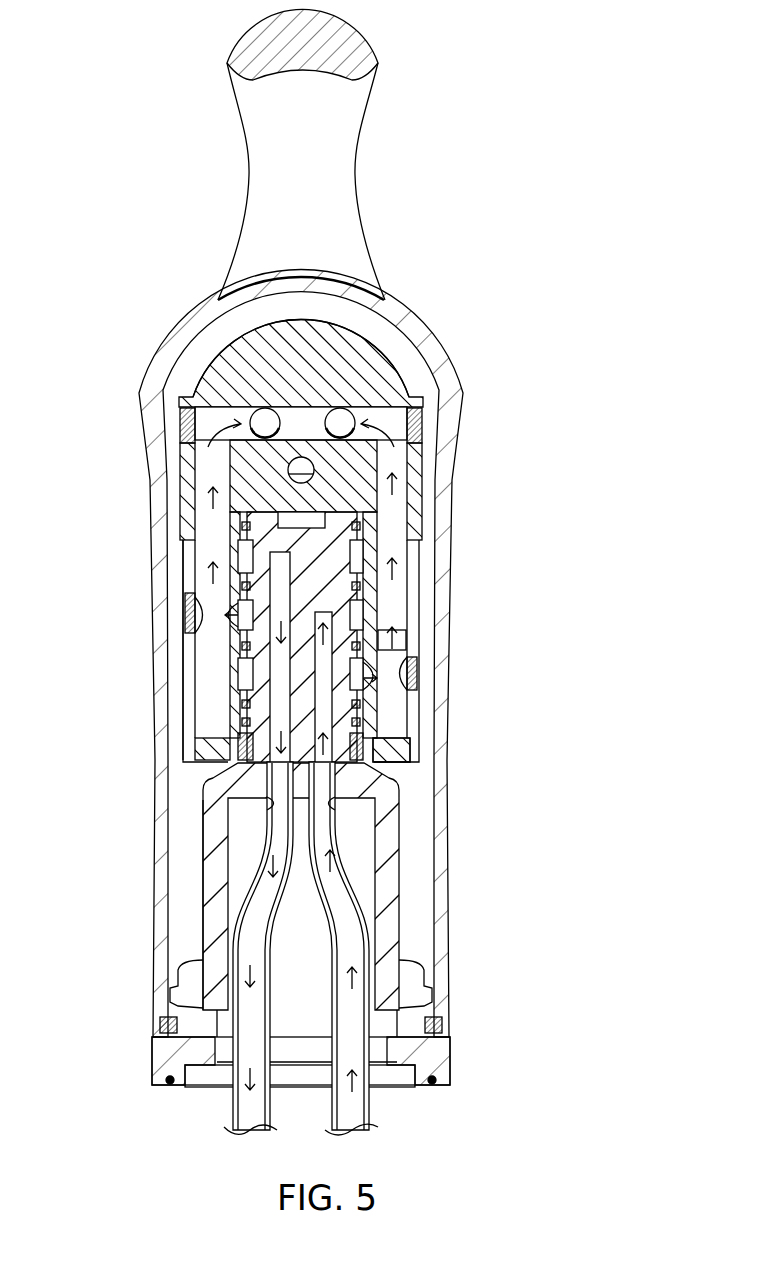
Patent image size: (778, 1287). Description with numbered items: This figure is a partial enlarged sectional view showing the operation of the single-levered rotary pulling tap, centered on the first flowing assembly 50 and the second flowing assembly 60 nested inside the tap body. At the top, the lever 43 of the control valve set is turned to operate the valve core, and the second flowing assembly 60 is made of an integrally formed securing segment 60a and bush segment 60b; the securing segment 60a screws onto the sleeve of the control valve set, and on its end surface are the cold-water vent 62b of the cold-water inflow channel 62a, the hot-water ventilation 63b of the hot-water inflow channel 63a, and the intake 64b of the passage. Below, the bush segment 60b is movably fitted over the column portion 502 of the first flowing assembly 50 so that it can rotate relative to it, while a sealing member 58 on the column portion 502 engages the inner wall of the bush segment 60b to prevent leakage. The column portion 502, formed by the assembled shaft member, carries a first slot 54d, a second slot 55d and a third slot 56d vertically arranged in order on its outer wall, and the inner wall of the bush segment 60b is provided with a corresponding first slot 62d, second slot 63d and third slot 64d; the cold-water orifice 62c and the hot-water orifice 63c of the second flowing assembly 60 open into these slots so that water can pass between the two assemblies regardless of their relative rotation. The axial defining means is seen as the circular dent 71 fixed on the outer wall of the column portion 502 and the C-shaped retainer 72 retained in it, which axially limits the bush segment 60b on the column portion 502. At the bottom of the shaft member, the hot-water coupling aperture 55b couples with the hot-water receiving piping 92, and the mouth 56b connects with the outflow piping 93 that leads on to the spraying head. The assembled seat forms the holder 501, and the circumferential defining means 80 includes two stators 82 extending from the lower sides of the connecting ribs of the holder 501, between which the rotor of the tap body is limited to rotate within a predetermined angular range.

The lever 43 is at (363, 122).
The securing segment 60a is at (353, 330).
The hot-water ventilation 63b is at (265, 417).
The cold-water vent 62b is at (338, 418).
The second flowing assembly 60 is at (177, 468).
The intake 64b is at (303, 465).
The sealing member 58 is at (357, 527).
The first slot 62d is at (247, 557).
The first slot 54d is at (362, 553).
The hot-water inflow channel 63a is at (205, 577).
The second slot 55d is at (357, 607).
The bush segment 60b is at (187, 640).
The second slot 63d is at (398, 642).
The cold-water inflow channel 62a is at (355, 645).
The hot-water orifice 63c is at (235, 630).
The third slot 56d is at (375, 683).
The column portion 502 is at (258, 672).
The cold-water orifice 62c is at (372, 692).
The third slot 64d is at (247, 690).
The circular dent 71 is at (367, 747).
The C-shaped retainer 72 is at (383, 750).
The mouth 56b is at (280, 810).
The hot-water coupling aperture 55b is at (330, 808).
The first flowing assembly 50 is at (405, 857).
The outflow piping 93 is at (257, 887).
The hot-water receiving piping 92 is at (335, 870).
The holder 501 is at (202, 923).
The circumferential defining means 80 is at (425, 955).
The stator 82 is at (175, 980).